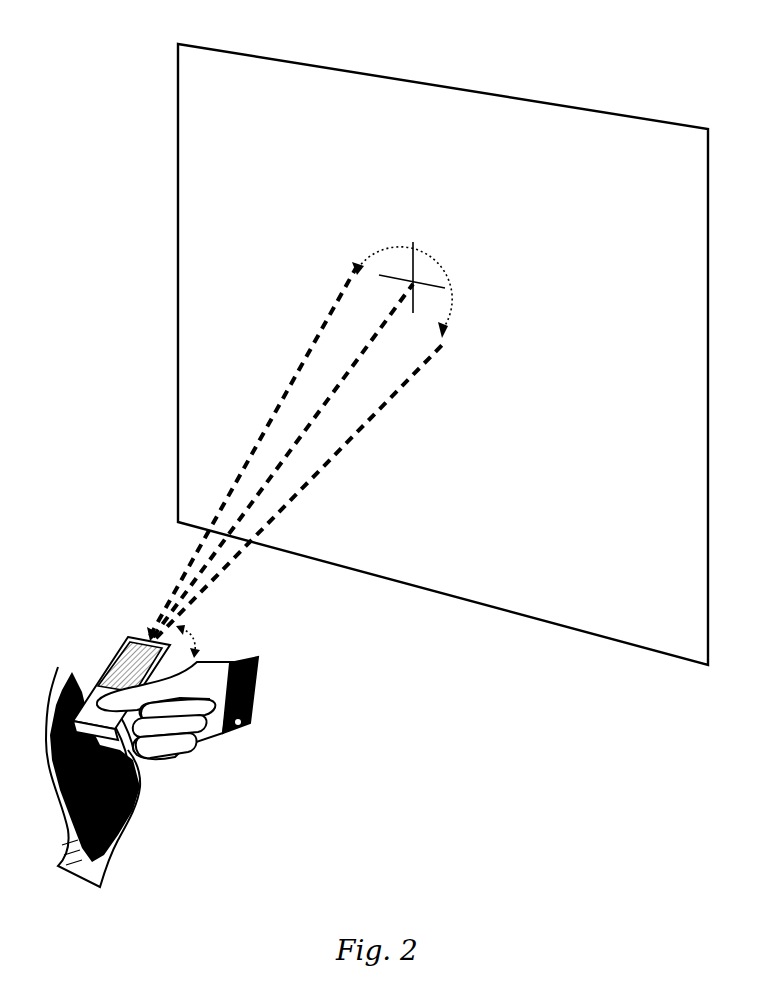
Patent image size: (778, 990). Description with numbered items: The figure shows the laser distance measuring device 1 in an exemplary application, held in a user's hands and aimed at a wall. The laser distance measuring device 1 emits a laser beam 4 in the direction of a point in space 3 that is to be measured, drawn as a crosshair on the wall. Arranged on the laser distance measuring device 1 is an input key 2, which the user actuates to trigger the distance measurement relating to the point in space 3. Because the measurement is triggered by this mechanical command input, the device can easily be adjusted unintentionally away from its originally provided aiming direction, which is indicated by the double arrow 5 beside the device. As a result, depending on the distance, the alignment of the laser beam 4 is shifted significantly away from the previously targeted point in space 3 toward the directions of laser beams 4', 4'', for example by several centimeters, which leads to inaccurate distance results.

The laser distance measuring device 1 is at (121, 648).
The input key 2 is at (94, 650).
The point in space 3 is at (436, 277).
The laser beam 4 is at (283, 460).
The laser beam 4' is at (253, 452).
The laser beam 4'' is at (301, 489).
The double arrow 5 is at (217, 636).